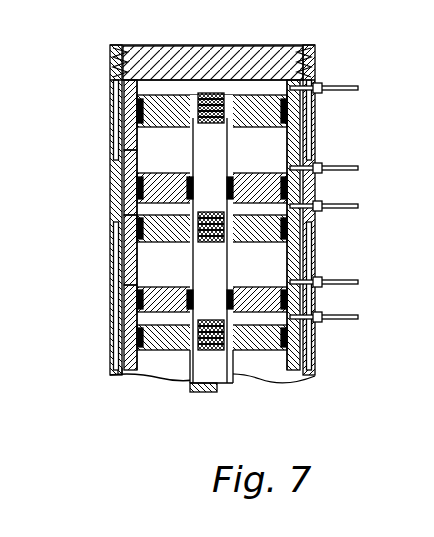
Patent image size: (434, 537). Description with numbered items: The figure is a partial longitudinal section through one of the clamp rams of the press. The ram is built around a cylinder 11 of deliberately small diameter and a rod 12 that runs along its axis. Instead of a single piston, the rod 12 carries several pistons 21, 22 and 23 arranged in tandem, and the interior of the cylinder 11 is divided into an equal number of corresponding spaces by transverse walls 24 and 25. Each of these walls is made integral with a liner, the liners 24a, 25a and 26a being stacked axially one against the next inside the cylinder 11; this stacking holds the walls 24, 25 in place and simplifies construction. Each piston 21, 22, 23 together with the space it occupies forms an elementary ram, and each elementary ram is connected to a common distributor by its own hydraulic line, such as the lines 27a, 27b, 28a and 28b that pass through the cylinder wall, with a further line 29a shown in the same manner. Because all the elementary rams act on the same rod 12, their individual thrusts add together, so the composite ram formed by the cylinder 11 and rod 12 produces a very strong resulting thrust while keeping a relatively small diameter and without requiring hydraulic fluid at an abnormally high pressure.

The cylinder 11 is at (120, 186).
The rod 12 is at (217, 372).
The piston 21 is at (252, 95).
The piston 22 is at (140, 270).
The piston 23 is at (170, 350).
The transverse wall 24 is at (123, 159).
The liner 24a is at (123, 93).
The transverse wall 25 is at (273, 350).
The liner 25a is at (123, 228).
The liner 26a is at (133, 376).
The line 27a is at (338, 85).
The line 27b is at (338, 165).
The line 28a is at (333, 208).
The line 28b is at (340, 280).
The port pin 29a is at (342, 322).